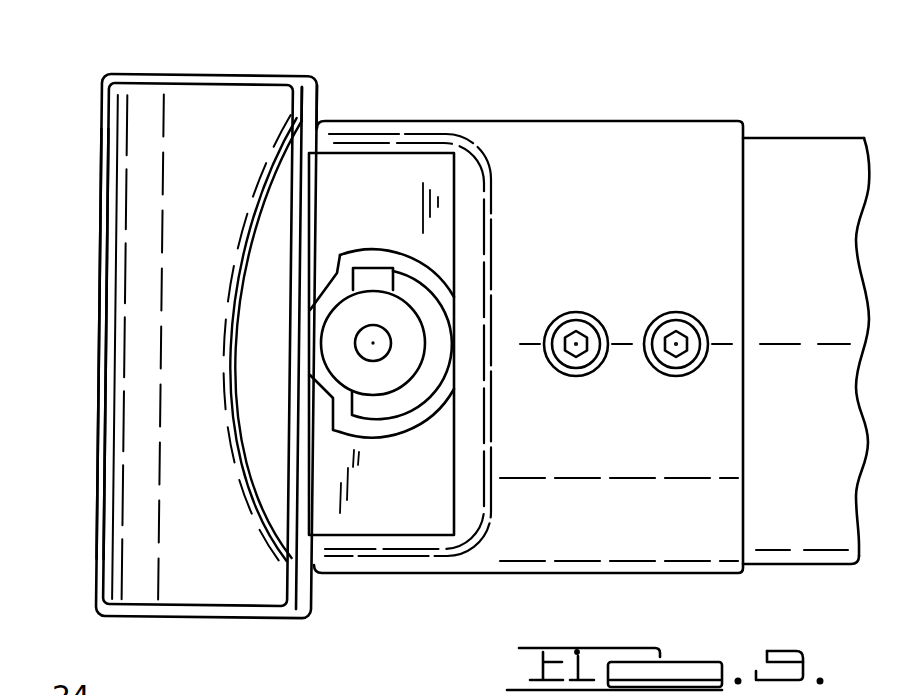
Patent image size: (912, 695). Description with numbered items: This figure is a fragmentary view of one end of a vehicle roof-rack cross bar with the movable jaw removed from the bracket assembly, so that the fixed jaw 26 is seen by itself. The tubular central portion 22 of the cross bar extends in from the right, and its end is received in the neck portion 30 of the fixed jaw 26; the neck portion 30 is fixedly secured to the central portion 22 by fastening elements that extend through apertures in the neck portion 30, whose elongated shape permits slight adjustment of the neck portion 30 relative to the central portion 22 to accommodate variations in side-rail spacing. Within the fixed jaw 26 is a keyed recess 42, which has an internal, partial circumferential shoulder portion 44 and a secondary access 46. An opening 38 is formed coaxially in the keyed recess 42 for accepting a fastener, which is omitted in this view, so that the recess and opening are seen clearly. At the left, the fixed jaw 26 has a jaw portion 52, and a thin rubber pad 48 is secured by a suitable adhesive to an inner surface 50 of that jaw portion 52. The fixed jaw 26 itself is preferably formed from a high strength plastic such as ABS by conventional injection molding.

The tubular central portion 22 is at (815, 152).
The fixed jaw 26 is at (97, 126).
The neck portion 30 is at (681, 130).
The opening 38 is at (378, 345).
The keyed recess 42 is at (420, 427).
The partial circumferential shoulder portion 44 is at (433, 378).
The secondary access 46 is at (375, 285).
The thin rubber pad 48 is at (192, 561).
The inner surface 50 is at (271, 78).
The jaw portion 52 is at (99, 268).